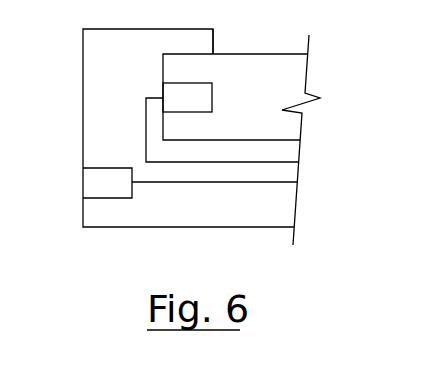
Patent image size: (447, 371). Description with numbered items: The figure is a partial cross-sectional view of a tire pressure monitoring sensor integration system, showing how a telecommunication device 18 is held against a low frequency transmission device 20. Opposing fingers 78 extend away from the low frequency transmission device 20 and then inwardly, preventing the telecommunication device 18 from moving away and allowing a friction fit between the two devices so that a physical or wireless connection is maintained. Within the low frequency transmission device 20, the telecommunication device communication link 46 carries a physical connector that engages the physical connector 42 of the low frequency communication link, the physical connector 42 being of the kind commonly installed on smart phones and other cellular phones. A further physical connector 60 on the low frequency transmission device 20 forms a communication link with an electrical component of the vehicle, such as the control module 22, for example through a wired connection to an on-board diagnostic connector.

The telecommunication device 18 is at (303, 74).
The low frequency transmission device 20 is at (83, 42).
The control module 22 is at (146, 130).
The physical connector 42 is at (211, 100).
The telecommunication device communication link 46 is at (163, 89).
The physical connector 60 is at (83, 185).
The opposing fingers 78 is at (213, 42).